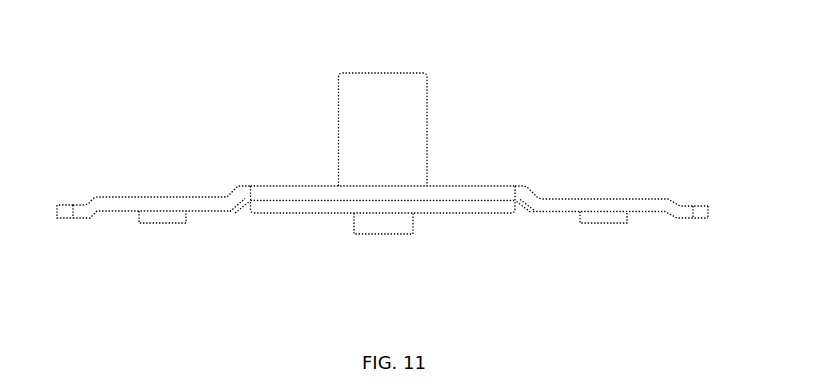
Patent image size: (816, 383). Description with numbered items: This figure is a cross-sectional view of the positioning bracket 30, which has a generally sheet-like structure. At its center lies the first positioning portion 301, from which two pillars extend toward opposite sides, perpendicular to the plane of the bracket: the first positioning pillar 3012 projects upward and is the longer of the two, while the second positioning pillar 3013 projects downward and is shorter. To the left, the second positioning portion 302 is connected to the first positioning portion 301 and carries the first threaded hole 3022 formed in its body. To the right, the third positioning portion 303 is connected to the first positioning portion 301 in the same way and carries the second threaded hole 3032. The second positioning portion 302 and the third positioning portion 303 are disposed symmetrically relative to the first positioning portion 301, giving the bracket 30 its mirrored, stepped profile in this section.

The positioning bracket 30 is at (383, 24).
The first positioning portion 301 is at (383, 170).
The first positioning pillar 3012 is at (416, 125).
The second positioning pillar 3013 is at (392, 223).
The second positioning portion 302 is at (154, 179).
The first threaded hole 3022 is at (155, 214).
The third positioning portion 303 is at (611, 179).
The second threaded hole 3032 is at (594, 223).